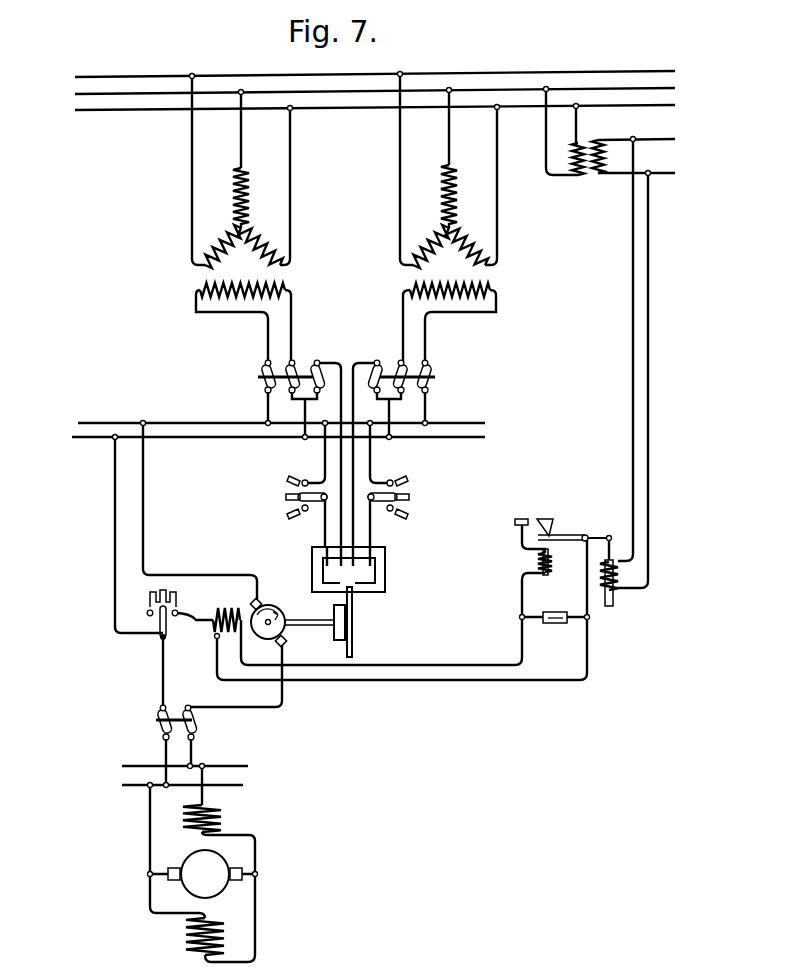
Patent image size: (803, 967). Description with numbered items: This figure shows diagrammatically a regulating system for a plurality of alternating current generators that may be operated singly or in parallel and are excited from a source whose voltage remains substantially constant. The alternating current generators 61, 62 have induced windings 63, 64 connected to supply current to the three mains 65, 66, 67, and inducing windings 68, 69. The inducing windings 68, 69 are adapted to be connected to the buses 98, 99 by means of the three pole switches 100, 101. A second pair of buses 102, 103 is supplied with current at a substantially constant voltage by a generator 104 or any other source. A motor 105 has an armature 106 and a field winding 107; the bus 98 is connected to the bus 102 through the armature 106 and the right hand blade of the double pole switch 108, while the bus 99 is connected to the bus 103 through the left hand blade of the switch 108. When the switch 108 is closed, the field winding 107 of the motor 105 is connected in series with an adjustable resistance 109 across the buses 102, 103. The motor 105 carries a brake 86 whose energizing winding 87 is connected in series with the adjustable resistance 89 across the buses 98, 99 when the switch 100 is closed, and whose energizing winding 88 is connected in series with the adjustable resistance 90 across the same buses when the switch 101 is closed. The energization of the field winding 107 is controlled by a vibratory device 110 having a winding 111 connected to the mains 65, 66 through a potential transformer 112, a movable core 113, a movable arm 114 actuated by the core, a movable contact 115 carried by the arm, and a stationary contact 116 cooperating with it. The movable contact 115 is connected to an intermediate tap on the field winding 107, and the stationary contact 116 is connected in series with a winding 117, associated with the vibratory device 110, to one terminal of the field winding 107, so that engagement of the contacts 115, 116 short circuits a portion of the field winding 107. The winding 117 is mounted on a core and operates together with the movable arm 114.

The alternating current generator 61 is at (225, 183).
The alternating current generator 62 is at (435, 182).
The induced winding 63 is at (255, 225).
The induced winding 64 is at (466, 225).
The main 65 is at (75, 110).
The main 66 is at (75, 94).
The main 67 is at (75, 77).
The inducing winding 68 is at (240, 285).
The inducing winding 69 is at (448, 285).
The brake 86 is at (360, 622).
The energizing winding 87 is at (324, 547).
The energizing winding 88 is at (372, 547).
The adjustable resistance 89 is at (285, 485).
The adjustable resistance 90 is at (412, 490).
The bus 98 is at (78, 423).
The bus 99 is at (72, 437).
The three pole switch 100 is at (252, 368).
The three pole switch 101 is at (442, 368).
The bus 102 is at (252, 760).
The bus 103 is at (243, 785).
The generator 104 is at (228, 864).
The motor 105 is at (225, 565).
The armature 106 is at (286, 631).
The field winding 107 is at (227, 605).
The double pole switch 108 is at (152, 722).
The adjustable resistance 109 is at (148, 607).
The vibratory device 110 is at (516, 523).
The winding 111 is at (620, 590).
The potential transformer 112 is at (590, 178).
The movable core 113 is at (611, 607).
The movable arm 114 is at (571, 533).
The movable contact 115 is at (553, 531).
The stationary contact 116 is at (548, 522).
The winding 117 is at (563, 573).